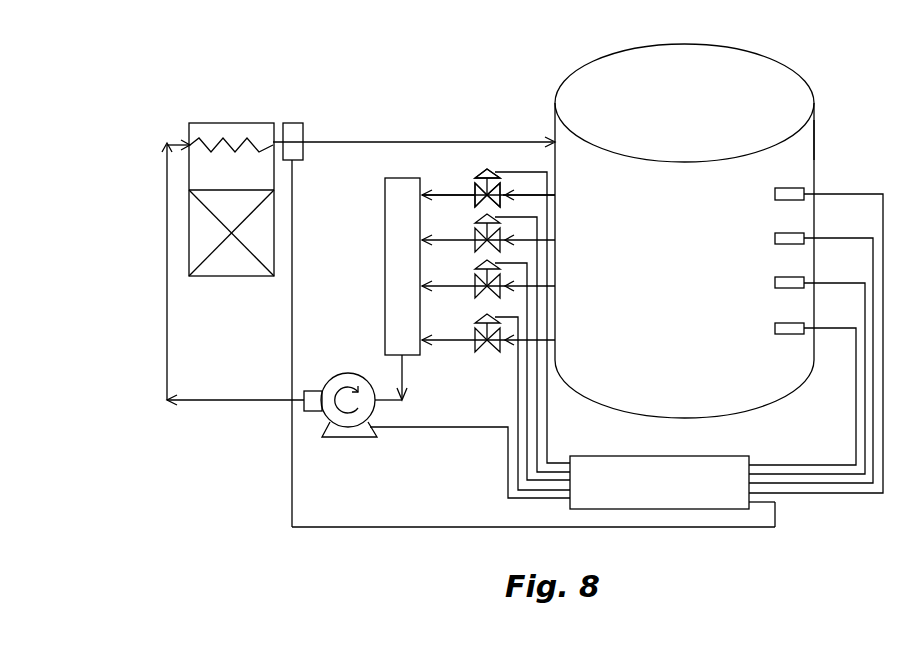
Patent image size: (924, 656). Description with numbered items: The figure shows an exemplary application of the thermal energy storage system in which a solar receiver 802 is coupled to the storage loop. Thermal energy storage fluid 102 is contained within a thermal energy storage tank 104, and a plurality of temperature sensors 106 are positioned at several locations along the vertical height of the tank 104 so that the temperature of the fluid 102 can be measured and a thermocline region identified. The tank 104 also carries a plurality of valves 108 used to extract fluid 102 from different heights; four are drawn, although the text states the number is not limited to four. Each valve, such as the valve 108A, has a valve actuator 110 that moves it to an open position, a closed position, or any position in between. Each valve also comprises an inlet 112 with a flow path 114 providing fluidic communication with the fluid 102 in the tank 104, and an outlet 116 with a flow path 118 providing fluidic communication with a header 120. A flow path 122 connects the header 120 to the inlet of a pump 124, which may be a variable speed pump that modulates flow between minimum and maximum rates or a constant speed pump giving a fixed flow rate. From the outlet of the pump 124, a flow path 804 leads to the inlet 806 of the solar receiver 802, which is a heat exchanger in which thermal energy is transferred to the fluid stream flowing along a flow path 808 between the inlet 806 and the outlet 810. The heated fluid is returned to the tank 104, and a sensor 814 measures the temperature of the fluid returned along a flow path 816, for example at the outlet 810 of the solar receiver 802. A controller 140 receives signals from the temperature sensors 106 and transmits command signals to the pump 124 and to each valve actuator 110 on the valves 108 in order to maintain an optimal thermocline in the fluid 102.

The thermal energy storage fluid 102 is at (658, 256).
The thermal energy storage tank 104 is at (816, 140).
The temperature sensors 106 is at (777, 323).
The valves 108 is at (488, 356).
The valve 108A is at (468, 214).
The valve actuator 110 is at (491, 168).
The inlet 112 is at (504, 194).
The flow path 114 is at (504, 200).
The outlet 116 is at (476, 190).
The flow path 118 is at (438, 194).
The header 120 is at (385, 205).
The flow path 122 is at (402, 380).
The pump 124 is at (353, 437).
The controller 140 is at (650, 498).
The solar receiver 802 is at (209, 98).
The flow path 804 is at (167, 310).
The inlet 806 is at (186, 143).
The flow path 808 is at (228, 140).
The outlet 810 is at (273, 146).
The sensor 814 is at (292, 123).
The flow path 816 is at (343, 142).